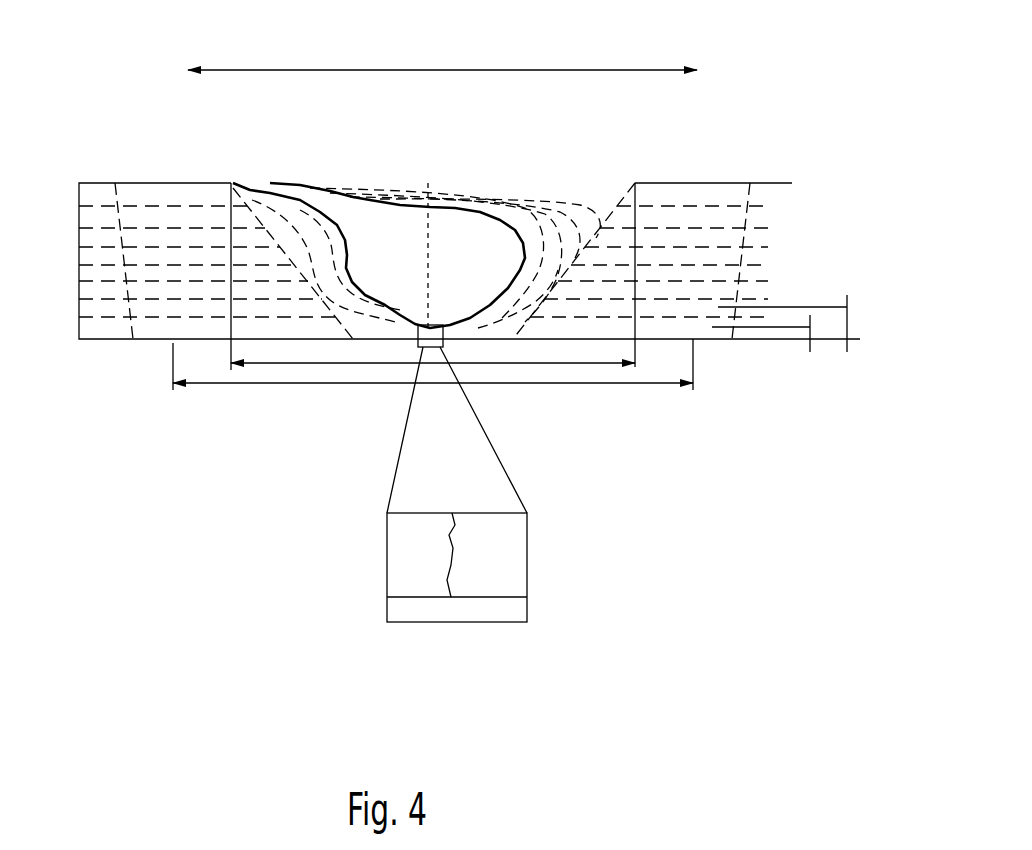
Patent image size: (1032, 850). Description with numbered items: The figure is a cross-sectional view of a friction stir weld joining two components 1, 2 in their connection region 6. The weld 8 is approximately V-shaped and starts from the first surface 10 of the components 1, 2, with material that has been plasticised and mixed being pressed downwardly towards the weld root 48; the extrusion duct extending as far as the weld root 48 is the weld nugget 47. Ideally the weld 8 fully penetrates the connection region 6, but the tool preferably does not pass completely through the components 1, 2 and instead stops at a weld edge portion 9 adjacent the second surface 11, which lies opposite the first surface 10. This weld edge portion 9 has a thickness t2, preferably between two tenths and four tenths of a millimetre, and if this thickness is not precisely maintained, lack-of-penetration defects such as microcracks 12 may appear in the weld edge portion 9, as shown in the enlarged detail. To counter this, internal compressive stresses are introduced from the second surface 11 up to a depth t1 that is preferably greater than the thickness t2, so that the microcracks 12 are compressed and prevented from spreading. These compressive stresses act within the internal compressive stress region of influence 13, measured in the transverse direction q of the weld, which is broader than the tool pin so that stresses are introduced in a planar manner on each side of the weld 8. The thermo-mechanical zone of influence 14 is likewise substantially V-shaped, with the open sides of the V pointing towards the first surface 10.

The component 1 is at (150, 215).
The component 2 is at (672, 213).
The connection region 6 is at (438, 237).
The weld 8 is at (552, 213).
The weld edge portion 9 is at (402, 565).
The first surface 10 is at (203, 181).
The second surface 11 is at (312, 340).
The microcrack 12 is at (453, 548).
The internal compressive stress region of influence 13 is at (232, 385).
The thermo-mechanical zone of influence 14 is at (590, 363).
The weld nugget 47 is at (388, 233).
The weld root 48 is at (420, 343).
The transverse direction q is at (338, 68).
The depth t1 is at (847, 342).
The thickness t2 is at (810, 340).